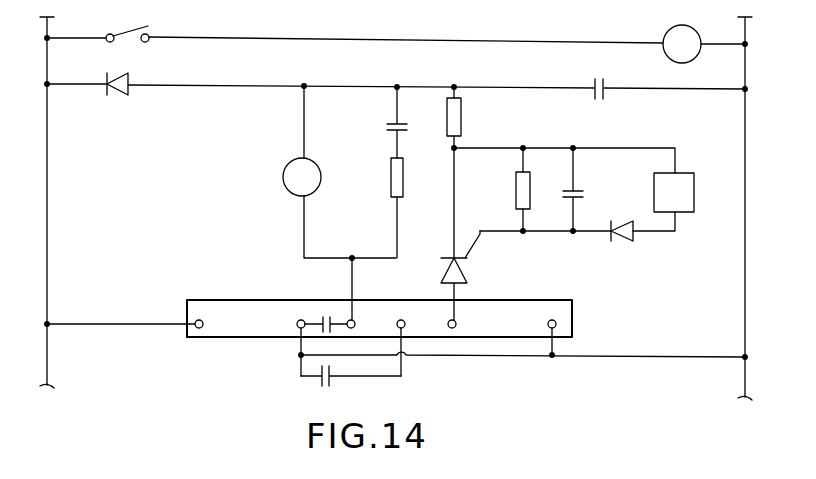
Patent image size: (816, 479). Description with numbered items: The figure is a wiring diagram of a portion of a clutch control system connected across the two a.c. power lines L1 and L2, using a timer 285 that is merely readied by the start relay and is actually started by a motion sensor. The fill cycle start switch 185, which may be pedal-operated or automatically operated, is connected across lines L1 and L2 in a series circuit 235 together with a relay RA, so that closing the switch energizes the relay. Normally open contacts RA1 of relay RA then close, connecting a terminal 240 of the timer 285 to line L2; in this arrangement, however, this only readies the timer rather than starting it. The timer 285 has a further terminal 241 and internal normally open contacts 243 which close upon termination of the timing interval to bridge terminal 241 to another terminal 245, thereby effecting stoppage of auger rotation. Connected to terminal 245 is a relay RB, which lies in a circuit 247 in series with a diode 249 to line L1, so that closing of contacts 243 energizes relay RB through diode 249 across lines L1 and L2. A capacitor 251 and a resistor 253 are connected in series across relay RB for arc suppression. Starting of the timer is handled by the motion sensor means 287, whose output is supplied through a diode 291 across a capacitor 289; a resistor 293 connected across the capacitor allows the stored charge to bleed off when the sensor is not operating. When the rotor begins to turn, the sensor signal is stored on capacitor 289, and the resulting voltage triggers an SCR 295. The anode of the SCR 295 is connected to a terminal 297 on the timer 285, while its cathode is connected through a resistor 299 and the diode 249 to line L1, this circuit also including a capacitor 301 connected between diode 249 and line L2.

The fill cycle start switch 185 is at (128, 36).
The series circuit 235 is at (311, 41).
The circuit 247 is at (209, 86).
The diode 249 is at (110, 96).
The capacitor 251 is at (386, 124).
The resistor 253 is at (390, 178).
The resistor 299 is at (462, 130).
The capacitor 301 is at (603, 94).
The resistor 293 is at (514, 198).
The capacitor 289 is at (584, 193).
The motion sensor means 287 is at (688, 182).
The diode 291 is at (634, 241).
The SCR 295 is at (467, 284).
The timer 285 is at (572, 302).
The terminal 241 is at (296, 325).
The normally open contacts 243 is at (321, 312).
The terminal 245 is at (356, 325).
The terminal 240 is at (405, 326).
The terminal 297 is at (456, 326).
The relay RA is at (708, 18).
The relay RB is at (286, 181).
The normally open contacts RA1 is at (330, 382).
The power line L1 is at (47, 165).
The power line L2 is at (745, 208).